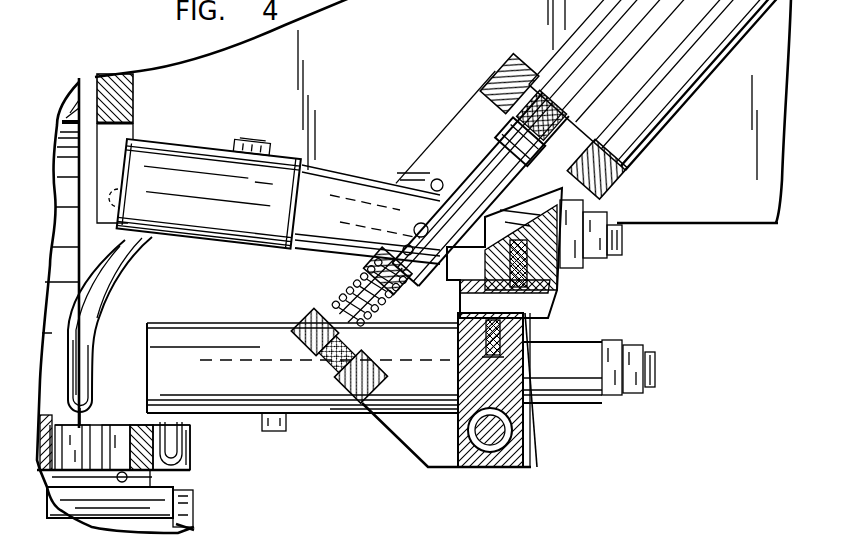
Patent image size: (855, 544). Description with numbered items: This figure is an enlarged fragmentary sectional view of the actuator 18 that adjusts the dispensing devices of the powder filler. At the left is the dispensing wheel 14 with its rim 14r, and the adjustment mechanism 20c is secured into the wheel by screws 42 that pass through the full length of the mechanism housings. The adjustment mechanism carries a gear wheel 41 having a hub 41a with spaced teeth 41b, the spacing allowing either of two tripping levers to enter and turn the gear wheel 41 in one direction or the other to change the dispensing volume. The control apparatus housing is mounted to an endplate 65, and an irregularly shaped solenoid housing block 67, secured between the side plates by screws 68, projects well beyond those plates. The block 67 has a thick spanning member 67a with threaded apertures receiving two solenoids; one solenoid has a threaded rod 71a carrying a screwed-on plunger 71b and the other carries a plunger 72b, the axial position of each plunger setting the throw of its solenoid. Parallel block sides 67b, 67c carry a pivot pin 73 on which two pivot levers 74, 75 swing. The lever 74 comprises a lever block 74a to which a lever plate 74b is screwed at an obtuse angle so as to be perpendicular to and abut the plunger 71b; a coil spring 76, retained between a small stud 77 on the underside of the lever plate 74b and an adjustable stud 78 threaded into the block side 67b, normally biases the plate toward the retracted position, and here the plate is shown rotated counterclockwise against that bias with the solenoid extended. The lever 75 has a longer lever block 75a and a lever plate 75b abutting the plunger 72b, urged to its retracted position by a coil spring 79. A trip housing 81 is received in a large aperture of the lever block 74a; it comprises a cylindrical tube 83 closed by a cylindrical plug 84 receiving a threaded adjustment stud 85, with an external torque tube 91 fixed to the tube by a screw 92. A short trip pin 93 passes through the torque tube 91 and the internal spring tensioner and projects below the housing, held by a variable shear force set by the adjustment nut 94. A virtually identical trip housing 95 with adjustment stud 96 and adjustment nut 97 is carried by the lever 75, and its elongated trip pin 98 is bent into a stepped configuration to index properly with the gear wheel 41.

The dispensing wheel 14 is at (78, 78).
The rim 14r is at (70, 113).
The endplate 65 is at (118, 76).
The actuator 18 is at (416, 104).
The solenoid housing block 67 is at (633, 164).
The spanning member 67a is at (517, 58).
The block side 67b is at (305, 325).
The block side 67c is at (428, 467).
The screws 68 is at (431, 180).
The threaded rod 71a is at (555, 115).
The plunger 71b is at (485, 178).
The plunger 72b is at (512, 142).
The pivot pin 73 is at (492, 445).
The pivot lever 74 is at (539, 426).
The lever block 74a is at (526, 472).
The lever plate 74b is at (378, 257).
The pivot lever 75 is at (562, 285).
The lever block 75a is at (585, 198).
The lever plate 75b is at (410, 230).
The coil spring 76 is at (378, 330).
The small stud 77 is at (390, 298).
The adjustable stud 78 is at (284, 380).
The coil spring 79 is at (402, 249).
The trip housing 81 is at (225, 343).
The cylindrical tube 83 is at (415, 397).
The cylindrical plug 84 is at (618, 345).
The threaded adjustment stud 85 is at (668, 382).
The external torque tube 91 is at (192, 340).
The screw 92 is at (290, 420).
The trip pin 93 is at (172, 445).
The adjustment nut 94 is at (643, 348).
The trip housing 95 is at (328, 170).
The threaded adjustment stud 96 is at (628, 250).
The adjustment nut 97 is at (605, 262).
The elongated trip pin 98 is at (115, 273).
The gear wheel 41 is at (202, 472).
The hub 41a is at (140, 430).
The teeth 41b is at (193, 447).
The screws 42 is at (193, 510).
The adjustment mechanism 20c is at (189, 531).